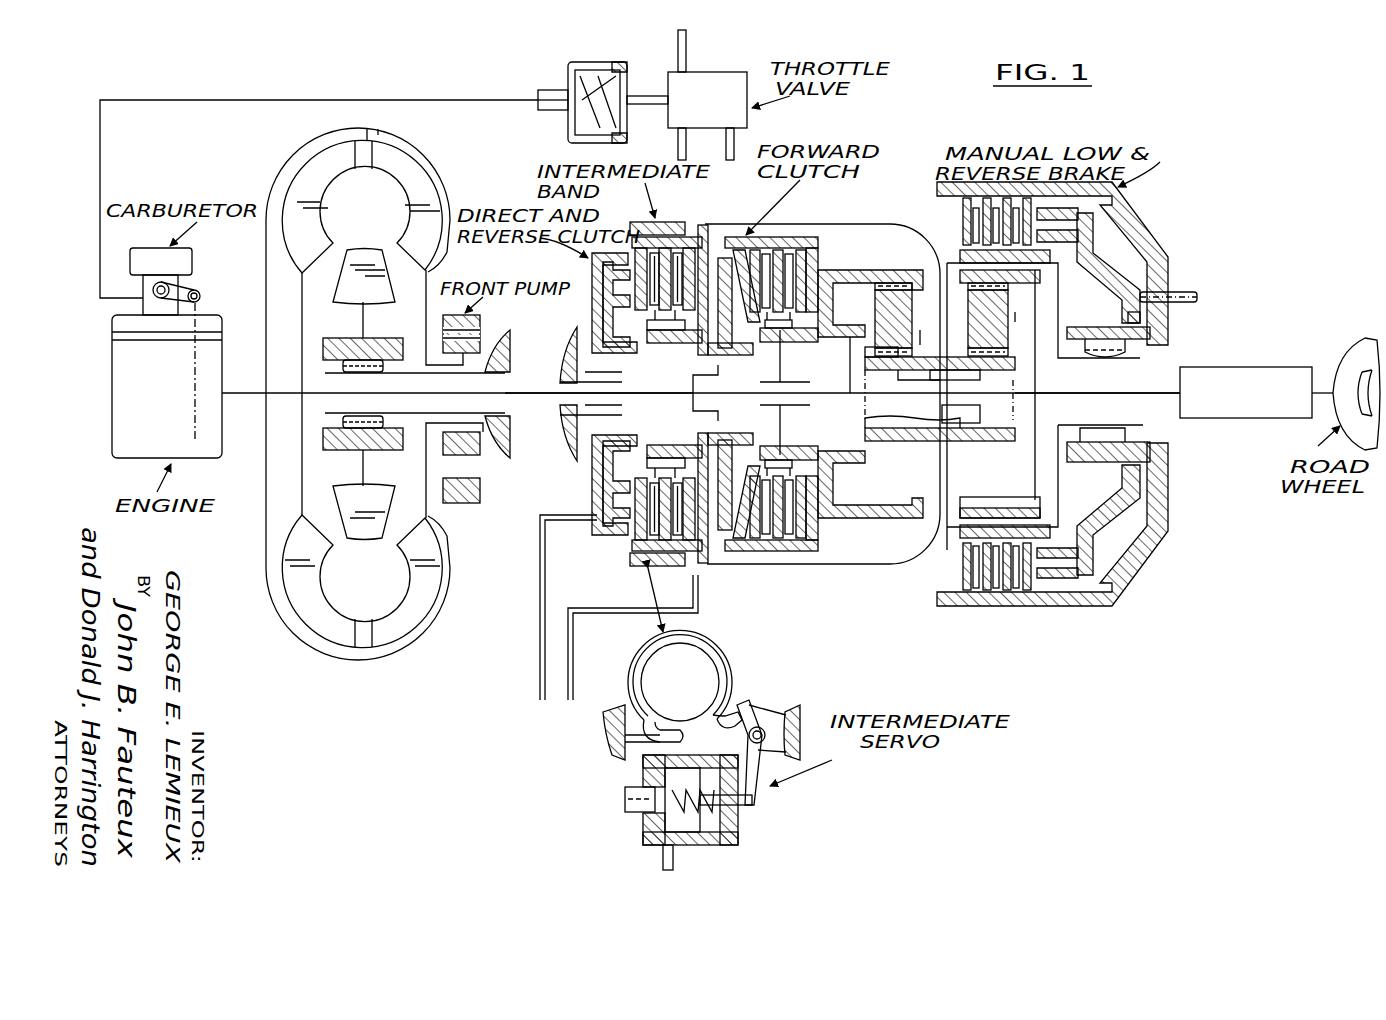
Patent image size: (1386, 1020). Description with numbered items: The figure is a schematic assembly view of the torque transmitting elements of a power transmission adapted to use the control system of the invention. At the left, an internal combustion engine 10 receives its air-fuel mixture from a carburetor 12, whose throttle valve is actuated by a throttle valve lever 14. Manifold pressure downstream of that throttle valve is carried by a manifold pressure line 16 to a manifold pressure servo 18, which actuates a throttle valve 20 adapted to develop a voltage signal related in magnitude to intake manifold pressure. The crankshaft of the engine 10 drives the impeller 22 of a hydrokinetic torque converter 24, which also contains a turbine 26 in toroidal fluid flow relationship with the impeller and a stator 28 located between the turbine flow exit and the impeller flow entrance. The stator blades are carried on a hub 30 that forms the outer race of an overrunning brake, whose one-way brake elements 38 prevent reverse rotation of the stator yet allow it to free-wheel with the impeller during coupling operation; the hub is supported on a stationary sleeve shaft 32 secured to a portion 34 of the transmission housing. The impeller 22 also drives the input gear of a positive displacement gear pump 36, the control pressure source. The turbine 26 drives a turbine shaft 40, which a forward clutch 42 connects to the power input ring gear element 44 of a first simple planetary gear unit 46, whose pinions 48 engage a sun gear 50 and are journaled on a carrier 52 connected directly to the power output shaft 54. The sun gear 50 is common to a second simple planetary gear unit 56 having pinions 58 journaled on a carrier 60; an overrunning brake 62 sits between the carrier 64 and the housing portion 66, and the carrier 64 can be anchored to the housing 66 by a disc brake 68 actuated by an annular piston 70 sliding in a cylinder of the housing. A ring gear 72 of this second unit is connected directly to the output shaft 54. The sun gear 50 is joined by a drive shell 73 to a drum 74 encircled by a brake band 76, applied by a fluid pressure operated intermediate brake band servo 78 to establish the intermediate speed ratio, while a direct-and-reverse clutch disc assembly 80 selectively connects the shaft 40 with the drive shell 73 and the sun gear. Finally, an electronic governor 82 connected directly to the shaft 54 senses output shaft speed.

The internal combustion engine 10 is at (132, 383).
The carburetor 12 is at (153, 262).
The throttle valve lever 14 is at (200, 296).
The manifold pressure line 16 is at (101, 173).
The manifold pressure servo 18 is at (590, 62).
The throttle valve 20 is at (712, 70).
The impeller 22 is at (423, 178).
The hydrokinetic torque converter 24 is at (450, 202).
The turbine 26 is at (318, 163).
The stator 28 is at (350, 287).
The hub 30 is at (373, 450).
The stationary sleeve shaft 32 is at (450, 373).
The transmission housing portion 34 is at (508, 446).
The positive displacement gear pump 36 is at (470, 450).
The one-way brake elements 38 is at (358, 450).
The turbine shaft 40 is at (633, 392).
The forward clutch 42 is at (805, 235).
The ring gear element 44 is at (905, 259).
The first simple planetary gear unit 46 is at (868, 334).
The pinions 48 is at (884, 312).
The sun gear 50 is at (868, 395).
The carrier 52 is at (852, 380).
The power output shaft 54 is at (1118, 393).
The second simple planetary gear unit 56 is at (988, 305).
The pinions 58 is at (1003, 328).
The carrier 60 is at (1060, 318).
The overrunning brake 62 is at (1110, 350).
The carrier 64 is at (1060, 450).
The housing portion 66 is at (1117, 567).
The disc brake 68 is at (1012, 592).
The annular piston 70 is at (1135, 497).
The ring gear 72 is at (987, 500).
The drive shell 73 is at (752, 242).
The drum 74 is at (652, 220).
The brake band 76 is at (680, 236).
The intermediate brake band servo 78 is at (743, 813).
The direct-and-reverse clutch disc assembly 80 is at (666, 222).
The electronic governor 82 is at (1260, 367).